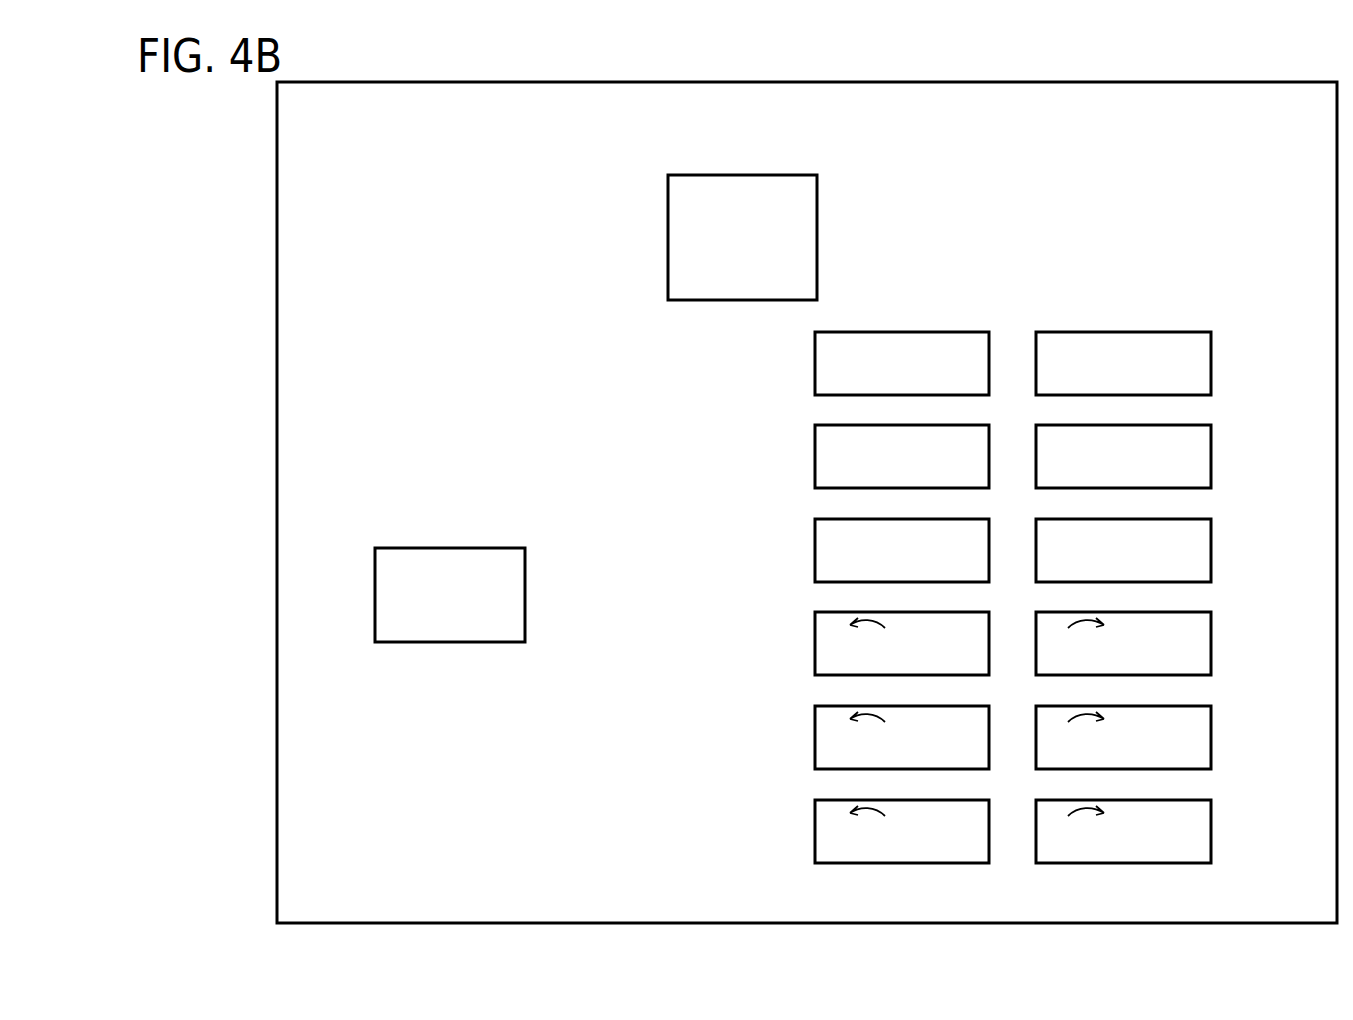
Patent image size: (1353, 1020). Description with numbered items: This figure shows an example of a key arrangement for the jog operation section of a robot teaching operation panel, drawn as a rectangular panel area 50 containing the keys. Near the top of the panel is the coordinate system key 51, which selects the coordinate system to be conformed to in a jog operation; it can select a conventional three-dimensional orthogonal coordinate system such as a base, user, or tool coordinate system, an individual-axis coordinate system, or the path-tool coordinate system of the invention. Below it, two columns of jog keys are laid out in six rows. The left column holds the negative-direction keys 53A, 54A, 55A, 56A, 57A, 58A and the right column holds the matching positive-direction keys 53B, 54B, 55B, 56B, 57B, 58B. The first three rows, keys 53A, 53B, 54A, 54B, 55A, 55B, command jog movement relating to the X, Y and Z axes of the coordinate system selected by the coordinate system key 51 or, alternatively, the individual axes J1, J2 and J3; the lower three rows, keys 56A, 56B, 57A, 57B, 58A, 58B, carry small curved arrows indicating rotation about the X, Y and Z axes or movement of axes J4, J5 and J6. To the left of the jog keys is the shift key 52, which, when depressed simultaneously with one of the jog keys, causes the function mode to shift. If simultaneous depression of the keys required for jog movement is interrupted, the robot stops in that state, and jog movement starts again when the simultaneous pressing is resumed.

The teaching operation panel display screen 50 is at (576, 82).
The coordinate system key 51 is at (747, 175).
The shift key 52 is at (525, 578).
The jog key 53A is at (815, 363).
The jog key 53B is at (1212, 362).
The jog key 54A is at (815, 456).
The jog key 54B is at (1212, 455).
The jog key 55A is at (815, 550).
The jog key 55B is at (1212, 549).
The jog key 56A is at (815, 643).
The jog key 56B is at (1212, 642).
The jog key 57A is at (815, 737).
The jog key 57B is at (1212, 736).
The jog key 58A is at (815, 831).
The jog key 58B is at (1212, 830).